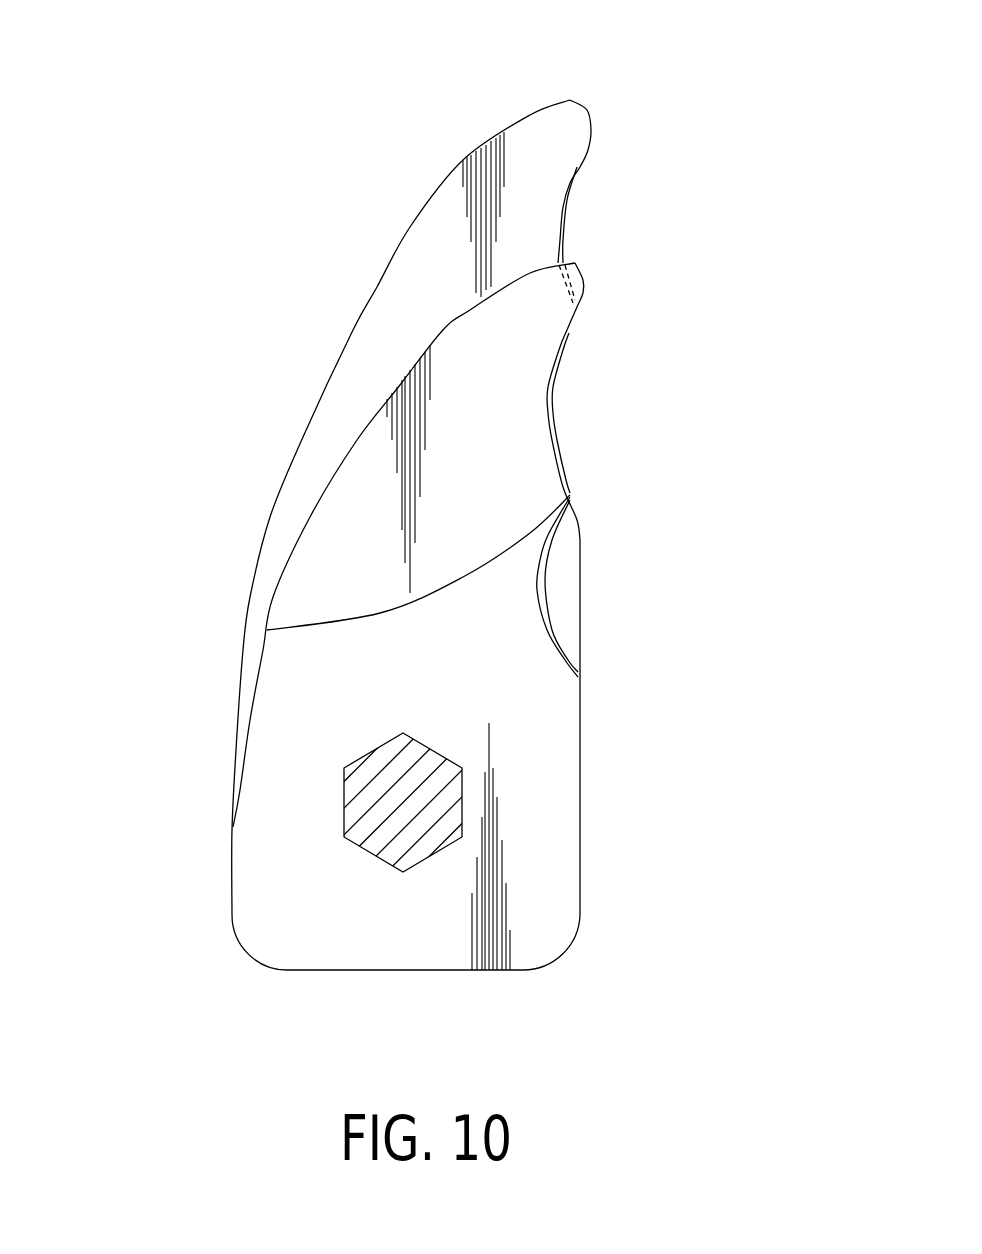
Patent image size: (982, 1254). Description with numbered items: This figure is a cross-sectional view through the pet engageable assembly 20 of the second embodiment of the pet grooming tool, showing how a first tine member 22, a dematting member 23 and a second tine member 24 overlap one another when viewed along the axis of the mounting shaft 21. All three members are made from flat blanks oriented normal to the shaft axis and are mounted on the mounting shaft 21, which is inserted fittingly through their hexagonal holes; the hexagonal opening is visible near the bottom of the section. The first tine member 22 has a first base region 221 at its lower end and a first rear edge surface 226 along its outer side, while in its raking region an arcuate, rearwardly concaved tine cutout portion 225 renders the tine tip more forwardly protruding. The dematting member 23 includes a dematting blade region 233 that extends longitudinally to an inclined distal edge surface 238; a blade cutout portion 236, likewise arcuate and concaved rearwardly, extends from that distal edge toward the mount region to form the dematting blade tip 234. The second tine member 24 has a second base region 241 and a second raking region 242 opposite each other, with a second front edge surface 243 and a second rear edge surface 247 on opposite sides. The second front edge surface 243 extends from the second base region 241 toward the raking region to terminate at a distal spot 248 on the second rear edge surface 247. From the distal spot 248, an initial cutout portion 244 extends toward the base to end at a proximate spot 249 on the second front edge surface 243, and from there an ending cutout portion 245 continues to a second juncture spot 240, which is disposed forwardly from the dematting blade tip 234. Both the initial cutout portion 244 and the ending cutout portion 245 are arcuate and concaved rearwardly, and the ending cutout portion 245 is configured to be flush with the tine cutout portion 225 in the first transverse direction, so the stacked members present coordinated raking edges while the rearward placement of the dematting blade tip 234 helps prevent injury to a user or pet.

The pet engageable assembly 20 is at (452, 96).
The mounting shaft 21 is at (433, 808).
The first tine member 22 is at (377, 460).
The dematting member 23 is at (548, 748).
The second tine member 24 is at (387, 293).
The first base region 221 is at (562, 890).
The tine cutout portion 225 is at (548, 387).
The first rear edge surface 226 is at (243, 715).
The dematting blade region 233 is at (377, 627).
The dematting blade tip 234 is at (573, 492).
The blade cutout portion 236 is at (542, 590).
The inclined distal edge surface 238 is at (460, 577).
The second juncture spot 240 is at (580, 525).
The second base region 241 is at (358, 940).
The second raking region 242 is at (522, 157).
The second front edge surface 243 is at (580, 619).
The initial cutout portion 244 is at (563, 217).
The ending cutout portion 245 is at (553, 440).
The second rear edge surface 247 is at (273, 513).
The distal spot 248 is at (582, 110).
The proximate spot 249 is at (575, 307).